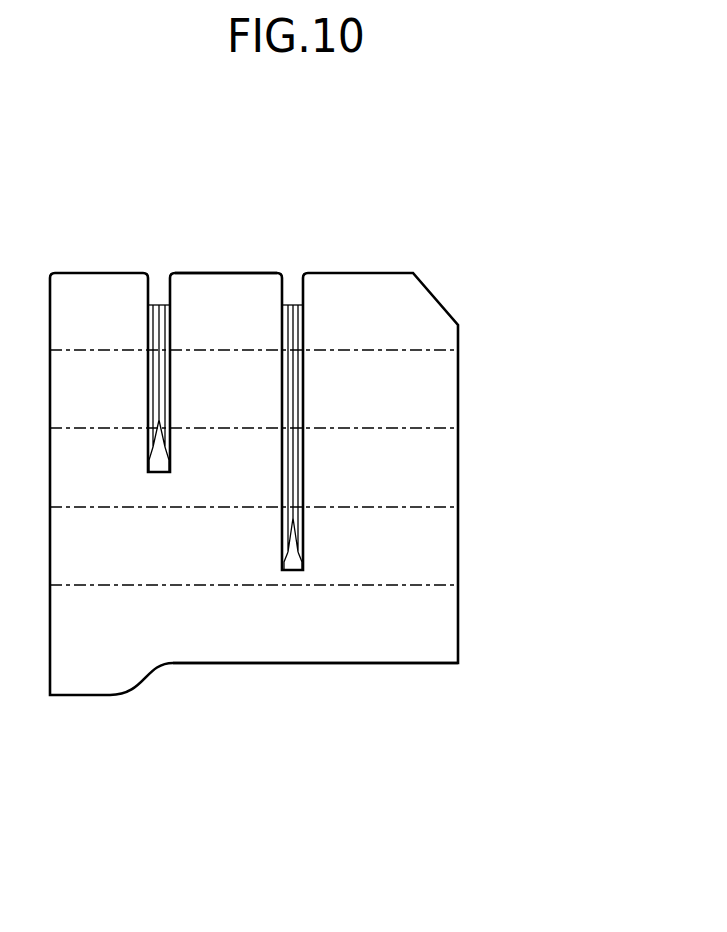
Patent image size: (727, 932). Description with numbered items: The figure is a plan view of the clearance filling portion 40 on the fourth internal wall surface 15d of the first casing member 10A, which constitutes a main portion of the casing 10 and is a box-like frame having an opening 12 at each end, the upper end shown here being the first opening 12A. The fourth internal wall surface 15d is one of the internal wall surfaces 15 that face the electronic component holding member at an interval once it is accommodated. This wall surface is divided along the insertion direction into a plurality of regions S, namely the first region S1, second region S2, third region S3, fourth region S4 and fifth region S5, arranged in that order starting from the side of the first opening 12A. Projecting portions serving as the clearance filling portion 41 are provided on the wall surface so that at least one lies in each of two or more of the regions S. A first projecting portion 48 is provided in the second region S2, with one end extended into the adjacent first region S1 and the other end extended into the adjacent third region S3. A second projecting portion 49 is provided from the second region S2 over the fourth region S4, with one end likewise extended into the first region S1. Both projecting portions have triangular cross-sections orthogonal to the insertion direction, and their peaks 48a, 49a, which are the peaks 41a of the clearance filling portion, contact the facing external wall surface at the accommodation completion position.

The first casing member 10A is at (263, 409).
The casing 10 is at (386, 186).
The first opening 12A is at (250, 231).
The opening 12 is at (220, 280).
The fourth internal wall surface 15d is at (315, 726).
The internal wall surface 15 is at (408, 650).
The clearance filling portion 40 is at (251, 522).
The first projecting portion 48 is at (139, 495).
The second projecting portion 49 is at (324, 496).
The clearance filling portion 41 is at (139, 495).
The peak 48a is at (139, 292).
The peak 49a is at (293, 367).
The peak 41a is at (158, 367).
The first region S1 is at (315, 315).
The second region S2 is at (482, 358).
The third region S3 is at (482, 436).
The fourth region S4 is at (482, 514).
The fifth region S5 is at (482, 592).
The region S is at (482, 280).